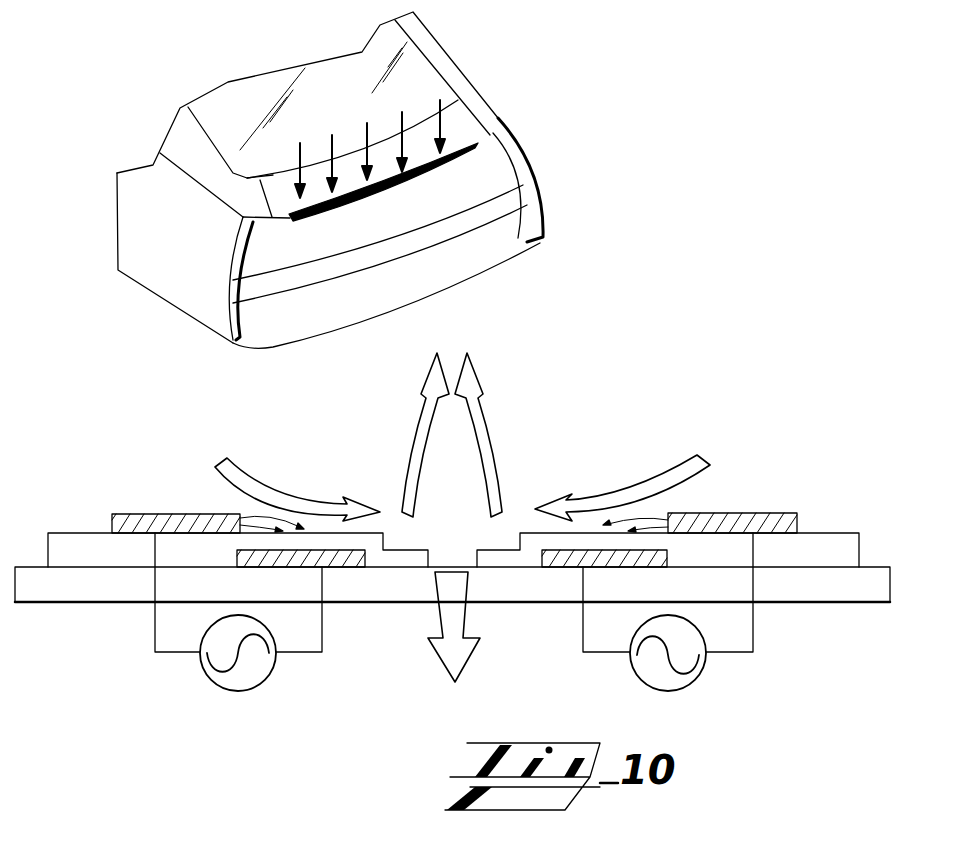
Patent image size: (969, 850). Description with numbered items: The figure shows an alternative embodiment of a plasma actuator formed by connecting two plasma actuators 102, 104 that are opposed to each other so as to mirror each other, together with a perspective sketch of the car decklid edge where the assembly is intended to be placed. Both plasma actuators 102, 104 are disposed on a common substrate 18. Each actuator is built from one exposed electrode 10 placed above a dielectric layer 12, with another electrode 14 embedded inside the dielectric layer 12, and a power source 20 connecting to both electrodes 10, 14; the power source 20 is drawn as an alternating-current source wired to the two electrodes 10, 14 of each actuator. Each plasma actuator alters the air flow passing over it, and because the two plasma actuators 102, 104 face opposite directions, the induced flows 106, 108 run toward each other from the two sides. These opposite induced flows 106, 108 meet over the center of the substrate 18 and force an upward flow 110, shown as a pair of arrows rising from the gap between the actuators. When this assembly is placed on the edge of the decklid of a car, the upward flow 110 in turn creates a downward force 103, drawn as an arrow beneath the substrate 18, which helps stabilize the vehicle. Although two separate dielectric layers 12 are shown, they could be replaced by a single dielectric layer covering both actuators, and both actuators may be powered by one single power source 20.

The exposed electrode 10 is at (172, 514).
The dielectric layer 12 is at (75, 533).
The embedded electrode 14 is at (350, 567).
The common substrate 18 is at (30, 572).
The power source 20 is at (270, 676).
The plasma actuator 102 is at (83, 634).
The downward force 103 is at (463, 622).
The plasma actuator 104 is at (815, 617).
The induced flow 106 is at (645, 493).
The induced flow 108 is at (273, 493).
The upward flow 110 is at (422, 460).